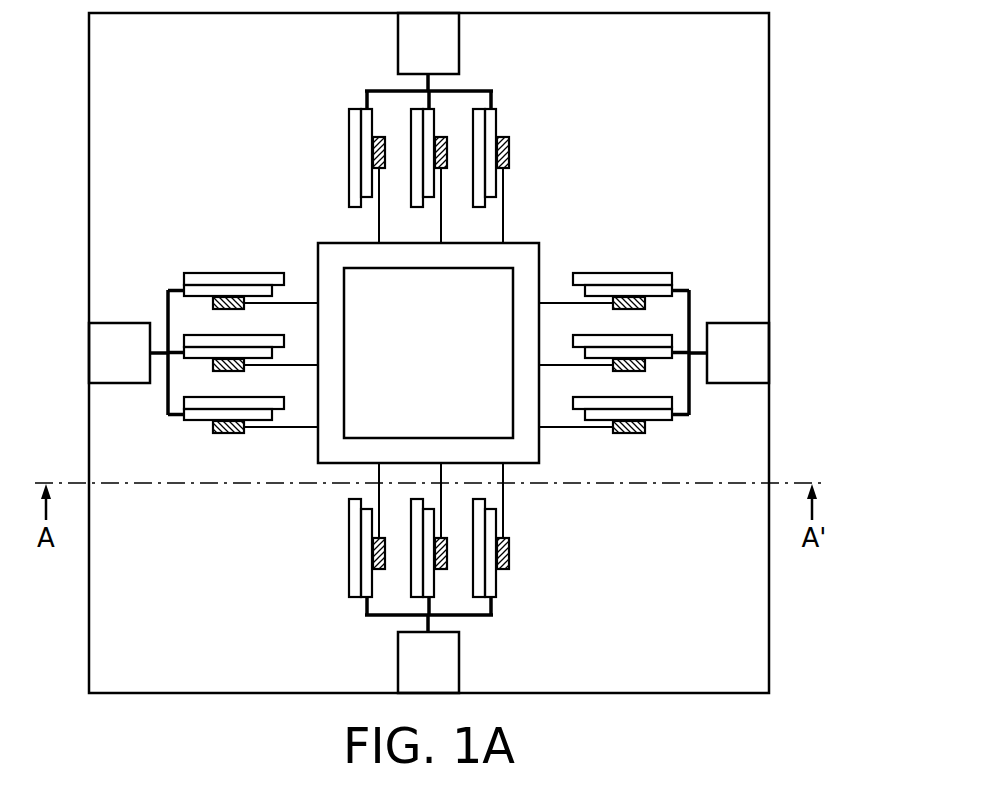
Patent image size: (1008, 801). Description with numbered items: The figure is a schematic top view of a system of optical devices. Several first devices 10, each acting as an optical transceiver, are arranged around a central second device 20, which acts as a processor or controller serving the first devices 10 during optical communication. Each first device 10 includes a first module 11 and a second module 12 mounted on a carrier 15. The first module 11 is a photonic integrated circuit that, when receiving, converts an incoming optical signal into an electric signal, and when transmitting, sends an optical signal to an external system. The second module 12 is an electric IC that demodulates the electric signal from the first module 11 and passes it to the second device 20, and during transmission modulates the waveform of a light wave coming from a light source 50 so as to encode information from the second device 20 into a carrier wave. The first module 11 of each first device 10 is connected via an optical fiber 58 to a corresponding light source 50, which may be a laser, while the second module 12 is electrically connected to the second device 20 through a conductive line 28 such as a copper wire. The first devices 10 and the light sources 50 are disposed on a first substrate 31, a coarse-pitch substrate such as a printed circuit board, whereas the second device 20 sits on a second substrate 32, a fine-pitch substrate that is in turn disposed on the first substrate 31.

The first device 10 is at (540, 153).
The first module 11 is at (655, 292).
The second module 12 is at (647, 303).
The carrier 15 is at (632, 280).
The second device 20 is at (443, 370).
The conductive line 28 is at (378, 220).
The first substrate 31 is at (752, 679).
The second substrate 32 is at (531, 259).
The light source 50 is at (443, 60).
The optical fiber 58 is at (376, 90).